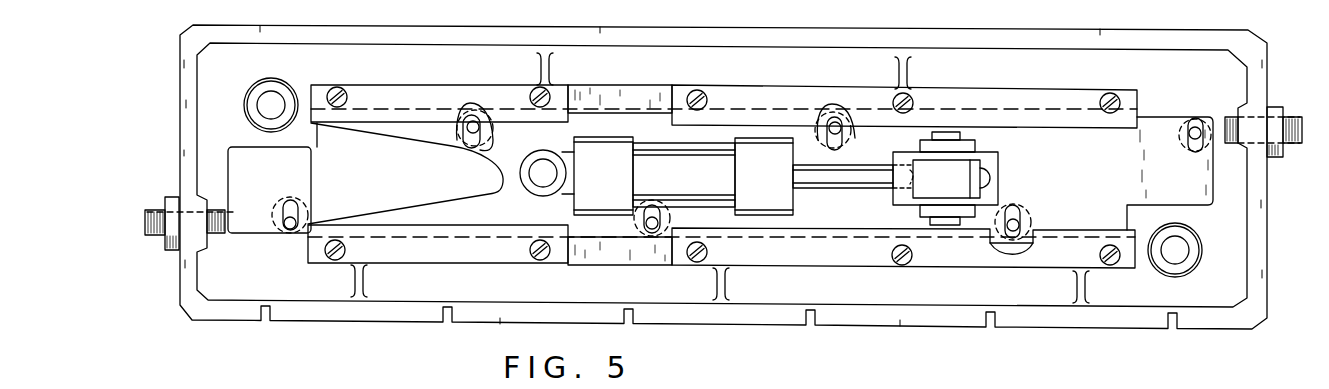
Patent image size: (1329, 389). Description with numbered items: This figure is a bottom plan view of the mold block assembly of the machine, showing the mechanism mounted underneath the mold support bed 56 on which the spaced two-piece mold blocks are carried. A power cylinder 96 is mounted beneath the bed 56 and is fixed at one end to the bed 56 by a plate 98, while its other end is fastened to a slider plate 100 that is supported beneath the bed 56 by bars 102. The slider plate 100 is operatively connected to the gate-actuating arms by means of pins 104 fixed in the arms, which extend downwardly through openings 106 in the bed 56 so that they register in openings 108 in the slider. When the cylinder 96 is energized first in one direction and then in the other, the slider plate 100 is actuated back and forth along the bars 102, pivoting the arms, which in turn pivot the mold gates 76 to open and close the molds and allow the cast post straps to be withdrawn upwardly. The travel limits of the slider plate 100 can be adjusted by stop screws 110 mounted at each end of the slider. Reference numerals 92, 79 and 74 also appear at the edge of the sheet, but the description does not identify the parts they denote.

The mold support bed 56 is at (1014, 38).
The power cylinder 96 is at (717, 165).
The plate 98 is at (423, 228).
The slider plate 100 is at (1126, 186).
The bars 102 is at (1043, 100).
The pins 104 is at (462, 123).
The openings 106 is at (508, 127).
The openings 108 is at (461, 140).
The stop screws 110 is at (145, 215).
The mold gates 76 is at (306, 384).
The element 92 is at (341, 388).
The element 79 is at (436, 388).
The element 74 is at (777, 388).